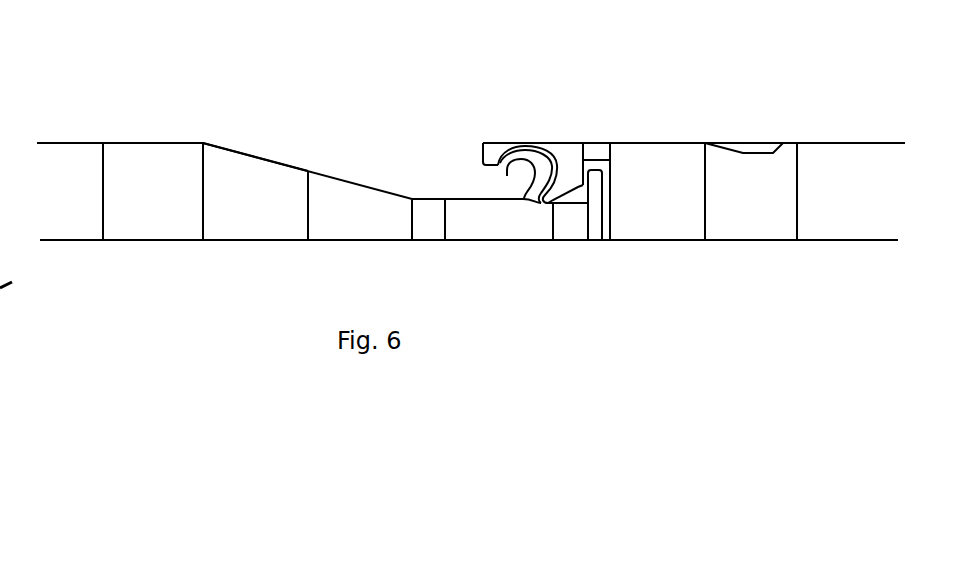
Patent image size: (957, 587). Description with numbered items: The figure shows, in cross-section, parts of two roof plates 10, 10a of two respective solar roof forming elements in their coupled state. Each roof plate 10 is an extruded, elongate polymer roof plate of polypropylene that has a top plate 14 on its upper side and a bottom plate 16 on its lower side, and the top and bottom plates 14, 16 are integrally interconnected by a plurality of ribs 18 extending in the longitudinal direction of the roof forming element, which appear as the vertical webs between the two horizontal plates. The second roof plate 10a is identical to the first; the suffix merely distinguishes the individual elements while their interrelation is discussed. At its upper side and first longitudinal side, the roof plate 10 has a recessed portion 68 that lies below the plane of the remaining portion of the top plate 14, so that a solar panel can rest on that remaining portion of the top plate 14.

The roof plate 10 is at (845, 106).
The roof plate 10a is at (341, 136).
The top plate 14 is at (232, 143).
The bottom plate 16 is at (222, 240).
The ribs 18 is at (203, 199).
The recessed portion 68 is at (432, 167).